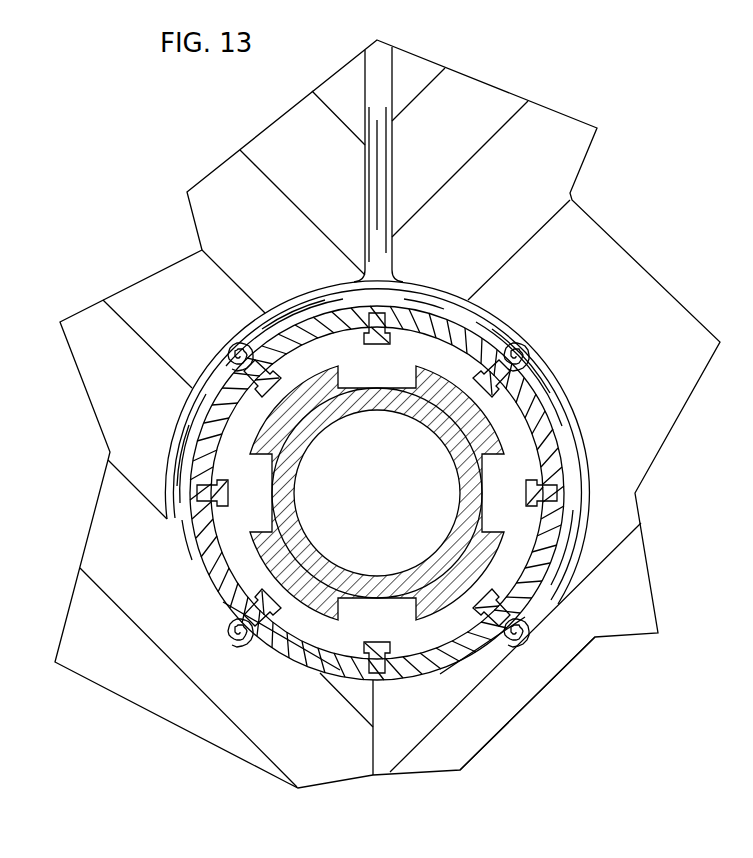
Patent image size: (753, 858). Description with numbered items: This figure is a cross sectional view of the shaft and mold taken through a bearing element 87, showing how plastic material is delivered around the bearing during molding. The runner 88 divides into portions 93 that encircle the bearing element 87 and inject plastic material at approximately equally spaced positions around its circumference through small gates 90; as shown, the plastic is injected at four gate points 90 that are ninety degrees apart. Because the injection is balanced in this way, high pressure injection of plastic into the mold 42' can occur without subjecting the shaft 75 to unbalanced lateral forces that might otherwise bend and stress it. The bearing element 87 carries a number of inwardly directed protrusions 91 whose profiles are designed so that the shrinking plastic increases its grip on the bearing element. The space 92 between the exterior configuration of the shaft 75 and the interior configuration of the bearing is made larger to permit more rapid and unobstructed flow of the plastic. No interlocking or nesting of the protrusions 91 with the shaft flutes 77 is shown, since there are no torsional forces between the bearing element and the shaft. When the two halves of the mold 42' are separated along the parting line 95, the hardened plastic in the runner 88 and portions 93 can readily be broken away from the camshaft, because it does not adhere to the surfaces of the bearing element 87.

The mold 42' is at (387, 414).
The runner 88 is at (393, 80).
The portions 93 is at (490, 310).
The bearing element 87 is at (540, 422).
The gates 90 is at (520, 350).
The protrusions 91 is at (360, 345).
The space 92 is at (385, 377).
The shaft flutes 77 is at (505, 447).
The shaft 75 is at (453, 475).
The parting line 95 is at (375, 760).